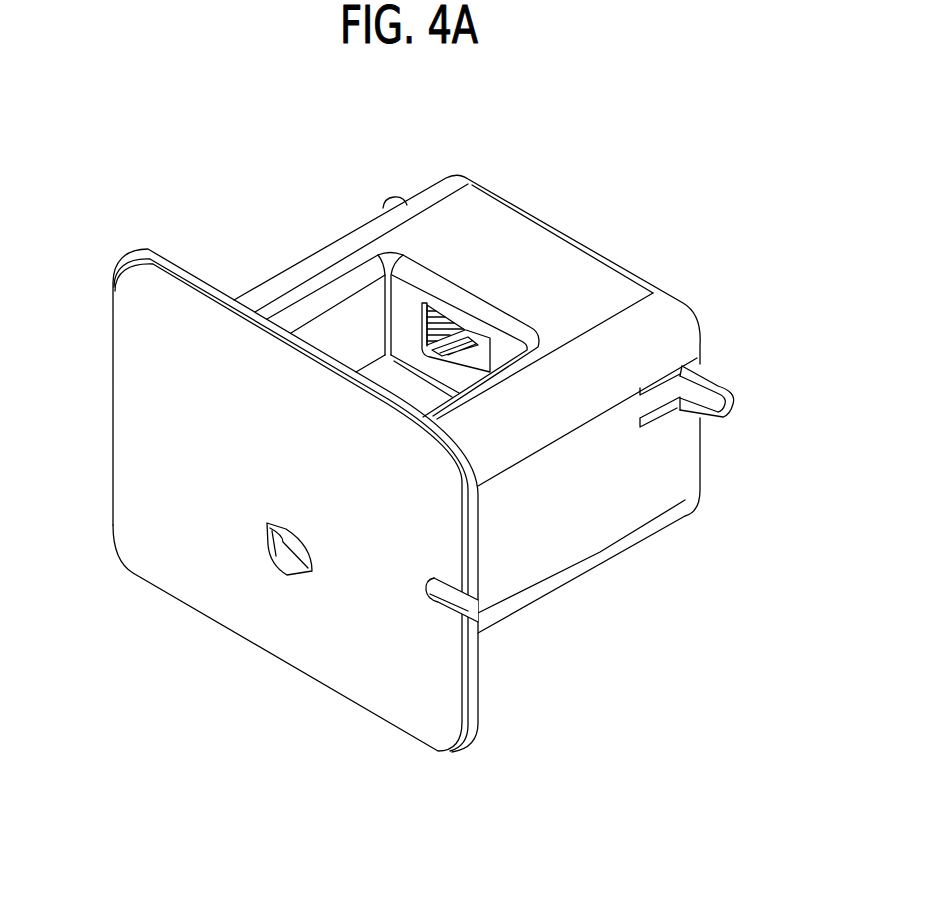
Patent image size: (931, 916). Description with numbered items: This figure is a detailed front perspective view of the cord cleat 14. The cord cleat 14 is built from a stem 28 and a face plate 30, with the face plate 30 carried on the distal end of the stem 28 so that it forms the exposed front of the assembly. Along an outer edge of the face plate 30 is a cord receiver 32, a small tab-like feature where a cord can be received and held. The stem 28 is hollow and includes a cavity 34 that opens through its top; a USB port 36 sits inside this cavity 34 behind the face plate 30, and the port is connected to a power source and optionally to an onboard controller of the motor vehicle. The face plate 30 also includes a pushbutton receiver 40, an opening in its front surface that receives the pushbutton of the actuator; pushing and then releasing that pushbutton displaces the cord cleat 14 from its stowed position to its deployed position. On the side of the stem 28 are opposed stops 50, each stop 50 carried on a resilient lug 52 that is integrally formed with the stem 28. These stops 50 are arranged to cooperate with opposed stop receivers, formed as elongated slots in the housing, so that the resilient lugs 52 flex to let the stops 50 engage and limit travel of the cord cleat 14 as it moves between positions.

The cord cleat 14 is at (245, 180).
The stem 28 is at (613, 260).
The face plate 30 is at (152, 465).
The cord receiver 32 is at (448, 606).
The cavity 34 is at (384, 376).
The USB port 36 is at (460, 335).
The pushbutton receiver 40 is at (284, 576).
The stop 50 is at (386, 200).
The resilient lug 52 is at (658, 403).